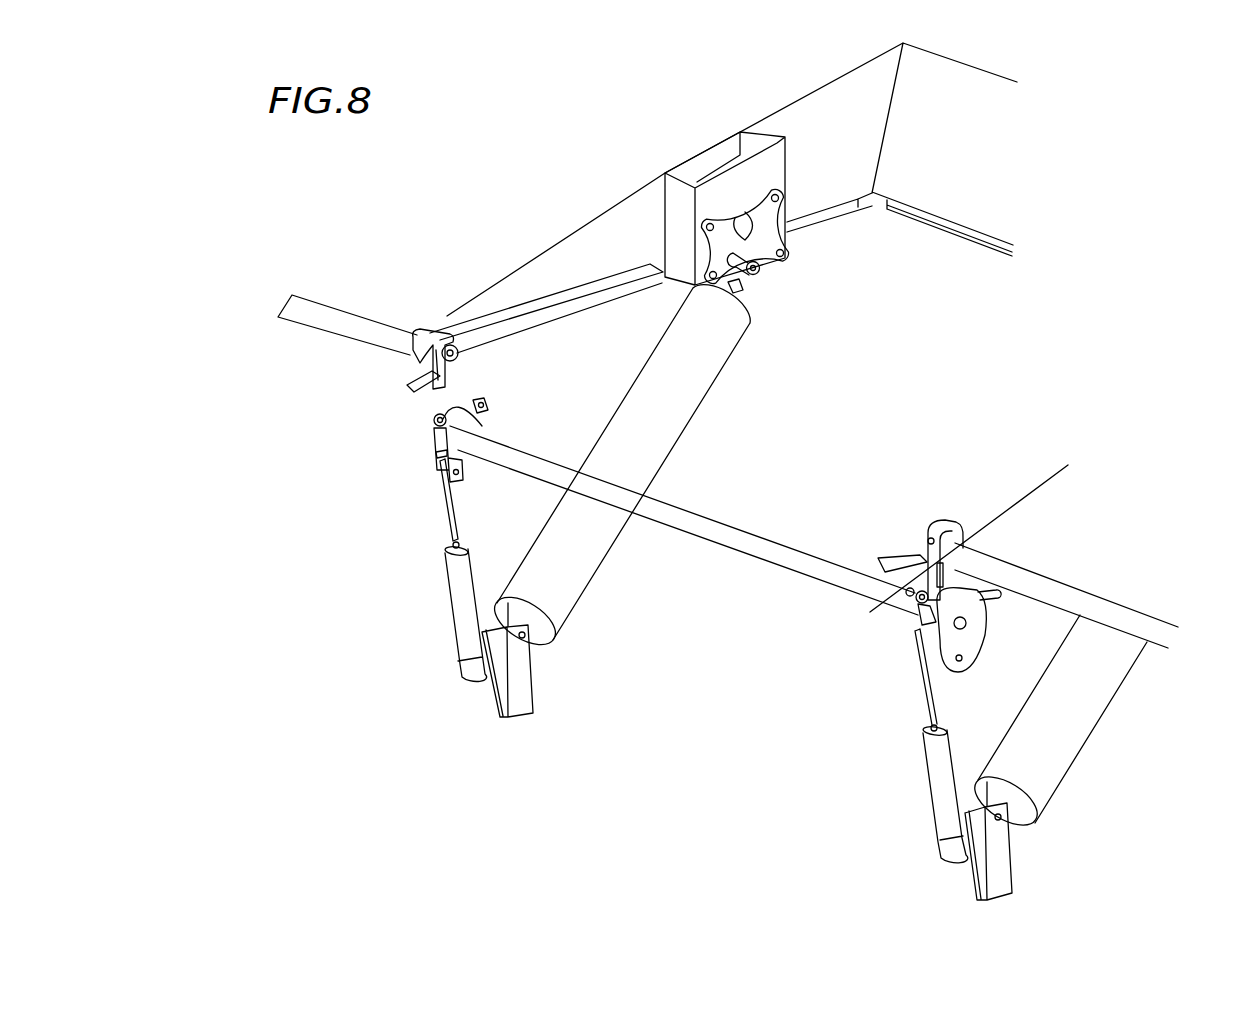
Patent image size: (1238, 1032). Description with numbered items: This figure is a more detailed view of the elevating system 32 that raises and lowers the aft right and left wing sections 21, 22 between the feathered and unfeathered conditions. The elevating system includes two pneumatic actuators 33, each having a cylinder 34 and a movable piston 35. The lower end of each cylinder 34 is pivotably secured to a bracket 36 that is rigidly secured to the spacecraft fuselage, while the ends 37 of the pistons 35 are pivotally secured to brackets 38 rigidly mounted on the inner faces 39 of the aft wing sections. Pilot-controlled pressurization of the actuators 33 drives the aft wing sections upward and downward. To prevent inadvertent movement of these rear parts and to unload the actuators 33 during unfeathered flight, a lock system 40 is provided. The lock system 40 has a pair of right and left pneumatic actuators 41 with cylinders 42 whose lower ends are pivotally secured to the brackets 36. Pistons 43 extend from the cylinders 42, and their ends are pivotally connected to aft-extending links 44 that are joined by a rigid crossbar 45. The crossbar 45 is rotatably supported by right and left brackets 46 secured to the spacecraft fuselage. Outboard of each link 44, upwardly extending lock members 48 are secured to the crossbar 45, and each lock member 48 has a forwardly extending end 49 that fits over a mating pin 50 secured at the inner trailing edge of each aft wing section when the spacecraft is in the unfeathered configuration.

The aft right wing section 21 is at (1143, 560).
The aft left wing section 22 is at (388, 304).
The elevating system 32 is at (634, 578).
The pneumatic actuator 33 is at (735, 372).
The cylinder 34 is at (682, 412).
The piston 35 is at (740, 290).
The bracket 36 is at (513, 695).
The piston end 37 is at (760, 277).
The bracket 38 is at (745, 237).
The inner face 39 is at (618, 264).
The lock system 40 is at (352, 624).
The pneumatic actuator 41 is at (432, 652).
The cylinder 42 is at (452, 578).
The piston 43 is at (452, 498).
The link 44 is at (453, 431).
The crossbar 45 is at (740, 537).
The bracket 46 is at (487, 414).
The lock member 48 is at (417, 366).
The forwardly extending end 49 is at (441, 338).
The mating pin 50 is at (462, 357).